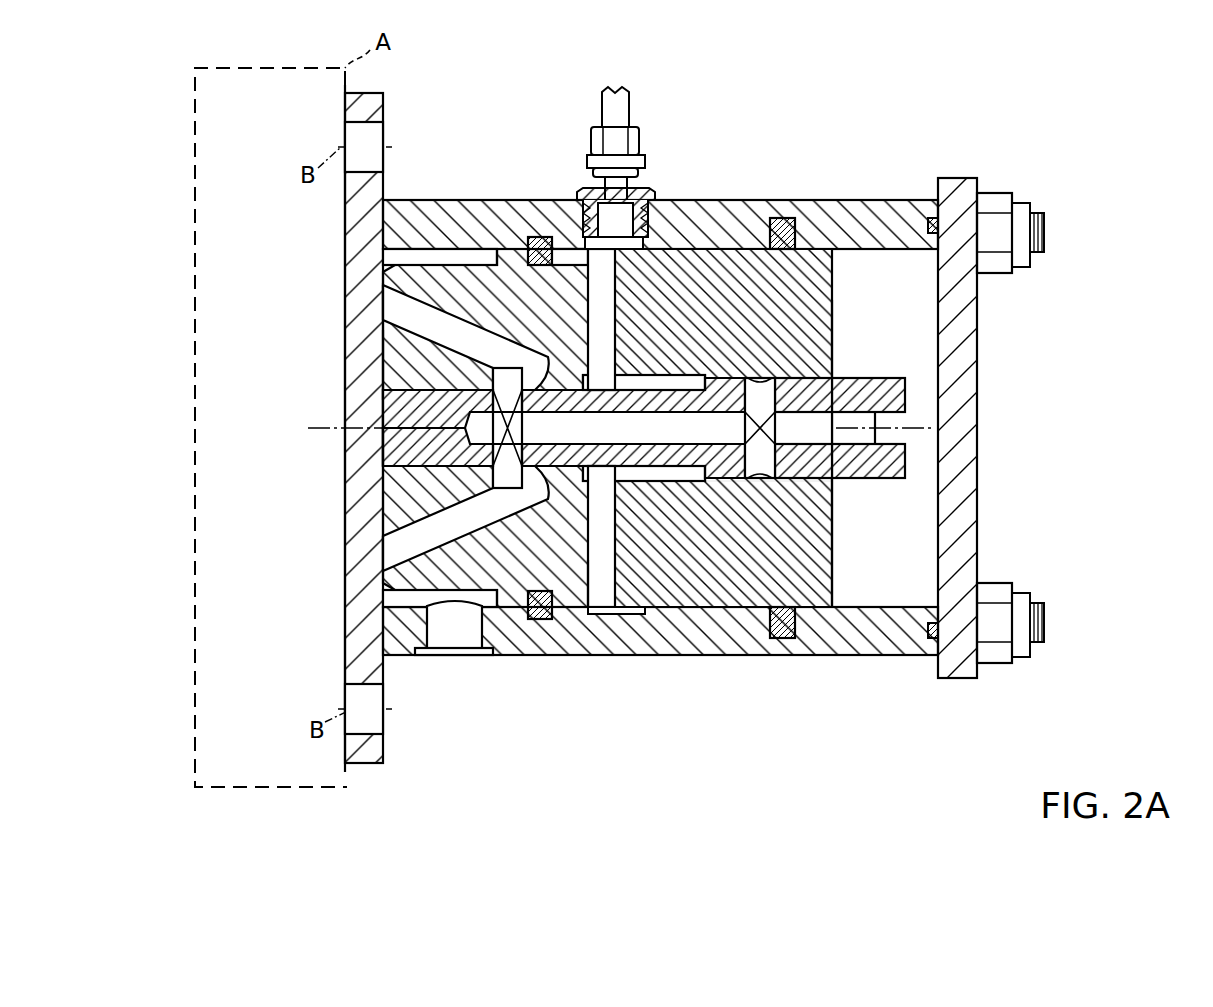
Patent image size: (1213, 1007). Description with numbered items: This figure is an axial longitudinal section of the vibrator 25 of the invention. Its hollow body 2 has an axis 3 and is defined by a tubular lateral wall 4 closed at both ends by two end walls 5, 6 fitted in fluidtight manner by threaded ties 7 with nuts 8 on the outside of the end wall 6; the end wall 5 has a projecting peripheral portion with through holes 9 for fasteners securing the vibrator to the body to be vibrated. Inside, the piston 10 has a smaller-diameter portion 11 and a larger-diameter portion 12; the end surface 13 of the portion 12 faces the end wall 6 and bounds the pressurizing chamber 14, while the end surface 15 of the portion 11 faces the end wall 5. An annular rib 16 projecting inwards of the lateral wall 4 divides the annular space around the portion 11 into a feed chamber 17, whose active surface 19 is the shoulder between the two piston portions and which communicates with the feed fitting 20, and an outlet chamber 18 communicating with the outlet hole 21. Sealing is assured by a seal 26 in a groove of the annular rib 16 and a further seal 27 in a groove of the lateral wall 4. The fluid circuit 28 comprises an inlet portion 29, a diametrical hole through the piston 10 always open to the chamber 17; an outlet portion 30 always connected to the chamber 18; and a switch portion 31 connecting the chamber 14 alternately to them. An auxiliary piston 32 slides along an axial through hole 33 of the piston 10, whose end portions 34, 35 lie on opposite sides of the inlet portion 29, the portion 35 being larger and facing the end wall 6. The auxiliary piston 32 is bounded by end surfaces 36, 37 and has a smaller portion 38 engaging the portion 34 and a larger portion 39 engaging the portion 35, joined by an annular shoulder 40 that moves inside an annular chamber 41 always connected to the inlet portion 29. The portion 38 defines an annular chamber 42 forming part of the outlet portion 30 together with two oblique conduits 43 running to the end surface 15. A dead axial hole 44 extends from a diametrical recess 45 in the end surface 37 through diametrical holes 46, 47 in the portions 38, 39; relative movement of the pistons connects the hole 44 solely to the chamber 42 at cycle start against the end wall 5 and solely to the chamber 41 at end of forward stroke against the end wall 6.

The hollow body 2 is at (663, 375).
The axis 3 is at (332, 430).
The tubular lateral wall 4 is at (885, 640).
The end wall 5 is at (362, 428).
The end wall 6 is at (957, 305).
The threaded ties 7 is at (1040, 228).
The nuts 8 is at (993, 214).
The through holes 9 is at (365, 137).
The piston 10 is at (472, 247).
The piston portion 11 is at (392, 594).
The larger-diameter portion 12 is at (818, 262).
The end surface 13 is at (835, 535).
The pressurizing chamber 14 is at (885, 565).
The end surface 15 is at (378, 360).
The annular rib 16 is at (565, 597).
The annular chamber 17 is at (590, 600).
The annular chamber 18 is at (400, 604).
The active surface 19 is at (600, 607).
The fitting 20 is at (633, 142).
The outlet hole 21 is at (455, 632).
The vibrator 25 is at (790, 140).
The lower seal 26 is at (540, 612).
The seal 27 is at (787, 635).
The fluid circuit 28 is at (733, 395).
The inlet portion 29 is at (597, 290).
The outlet portion 30 is at (425, 302).
The switch portion 31 is at (652, 346).
The auxiliary piston 32 is at (855, 365).
The axial through hole 33 is at (802, 373).
The end portion 34 is at (437, 450).
The end portion 35 is at (810, 466).
The end surface 36 is at (378, 452).
The end surface 37 is at (912, 395).
The auxiliary piston portion 38 is at (398, 412).
The auxiliary piston portion 39 is at (882, 383).
The annular shoulder 40 is at (703, 469).
The annular chamber 41 is at (634, 483).
The annular chamber 42 is at (524, 382).
The oblique conduits 43 is at (393, 312).
The dead axial hole 44 is at (672, 368).
The diametrical recess 45 is at (878, 420).
The diametrical hole 46 is at (396, 525).
The diametrical hole 47 is at (828, 600).